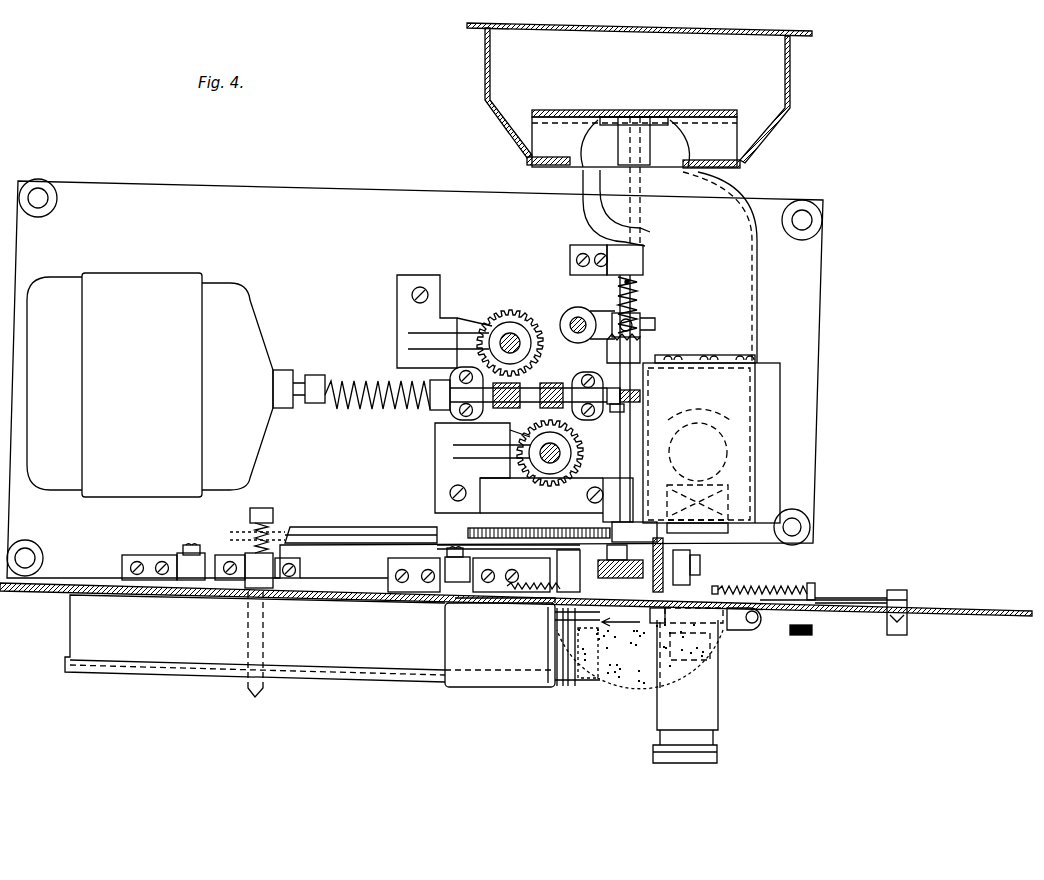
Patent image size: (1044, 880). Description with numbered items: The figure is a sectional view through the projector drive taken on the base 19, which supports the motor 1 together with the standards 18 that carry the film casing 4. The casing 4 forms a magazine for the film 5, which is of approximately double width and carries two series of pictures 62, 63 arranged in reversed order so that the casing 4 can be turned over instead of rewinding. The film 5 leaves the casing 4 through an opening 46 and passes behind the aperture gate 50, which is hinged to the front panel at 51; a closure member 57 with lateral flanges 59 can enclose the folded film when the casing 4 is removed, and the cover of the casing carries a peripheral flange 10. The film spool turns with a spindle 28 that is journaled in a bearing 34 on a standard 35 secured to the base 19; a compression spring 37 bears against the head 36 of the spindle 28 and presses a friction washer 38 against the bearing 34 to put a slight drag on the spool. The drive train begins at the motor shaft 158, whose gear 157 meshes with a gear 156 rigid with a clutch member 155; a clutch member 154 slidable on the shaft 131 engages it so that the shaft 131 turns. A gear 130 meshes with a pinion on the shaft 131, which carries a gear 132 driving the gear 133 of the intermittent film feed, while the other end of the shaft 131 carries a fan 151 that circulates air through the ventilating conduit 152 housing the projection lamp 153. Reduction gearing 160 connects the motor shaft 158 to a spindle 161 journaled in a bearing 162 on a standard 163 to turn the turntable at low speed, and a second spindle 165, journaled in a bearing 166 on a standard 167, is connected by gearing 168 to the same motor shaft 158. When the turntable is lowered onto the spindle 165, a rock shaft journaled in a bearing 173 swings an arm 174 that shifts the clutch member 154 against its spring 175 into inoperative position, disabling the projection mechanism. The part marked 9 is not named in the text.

The motor 1 is at (176, 385).
The casing 4 is at (255, 638).
The film 5 is at (632, 688).
The shaft 9 is at (634, 141).
The peripheral flange 10 is at (363, 674).
The standards 18 is at (170, 564).
The base 19 is at (415, 378).
The spindle 28 is at (250, 690).
The bearing 34 is at (263, 562).
The standard 35 is at (302, 574).
The head 36 is at (265, 513).
The compression spring 37 is at (255, 530).
The friction washer 38 is at (245, 557).
The opening 46 is at (621, 623).
The aperture gate 50 is at (735, 626).
The hinge 51 is at (758, 621).
The closure member 57 is at (472, 606).
The lateral flanges 59 is at (472, 682).
The series of pictures 62 is at (577, 677).
The series of pictures 63 is at (617, 643).
The gear 130 is at (494, 530).
The shaft 131 is at (622, 434).
The gear 132 is at (602, 575).
The gear 133 is at (655, 575).
The fan 151 is at (567, 130).
The ventilating conduit 152 is at (745, 283).
The projection lamp 153 is at (711, 448).
The clutch member 154 is at (642, 345).
The clutch member 155 is at (607, 350).
The gear 156 is at (645, 400).
The gear 157 is at (618, 410).
The motor shaft 158 is at (525, 392).
The reduction gearing 160 is at (544, 446).
The spindle 161 is at (558, 454).
The bearing 162 is at (550, 470).
The standard 163 is at (447, 465).
The spindle 165 is at (517, 338).
The bearing 166 is at (515, 325).
The standard 167 is at (437, 288).
The gearing 168 is at (497, 317).
The bearing 173 is at (717, 357).
The arm 174 is at (584, 315).
The spring 175 is at (640, 302).